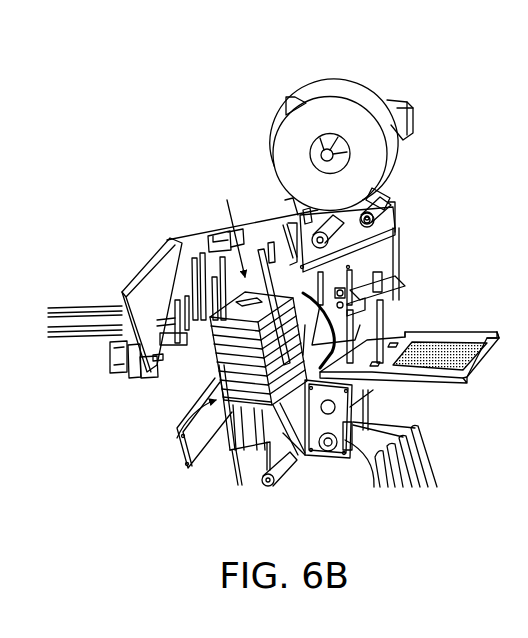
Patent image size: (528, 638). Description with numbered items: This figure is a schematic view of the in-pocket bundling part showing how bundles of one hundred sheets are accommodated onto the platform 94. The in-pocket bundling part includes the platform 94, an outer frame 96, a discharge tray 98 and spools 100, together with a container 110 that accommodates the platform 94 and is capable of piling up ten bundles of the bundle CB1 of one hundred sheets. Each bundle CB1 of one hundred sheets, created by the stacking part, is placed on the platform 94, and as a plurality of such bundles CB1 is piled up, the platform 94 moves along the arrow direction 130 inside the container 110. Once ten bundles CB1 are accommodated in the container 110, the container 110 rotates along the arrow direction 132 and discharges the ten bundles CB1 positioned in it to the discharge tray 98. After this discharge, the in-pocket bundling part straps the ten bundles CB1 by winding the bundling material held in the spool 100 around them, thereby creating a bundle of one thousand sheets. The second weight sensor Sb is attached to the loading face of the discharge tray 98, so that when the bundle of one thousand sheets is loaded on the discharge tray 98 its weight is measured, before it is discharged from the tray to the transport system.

The spool 100 is at (332, 115).
The arrow direction 130 is at (227, 227).
The outer frame 96 is at (157, 290).
The arrow direction 132 is at (318, 302).
The second weight sensor Sb is at (433, 343).
The discharge tray 98 is at (490, 332).
The bundle of one hundred sheets CB1 is at (222, 378).
The container 110 is at (180, 447).
The platform 94 is at (275, 402).